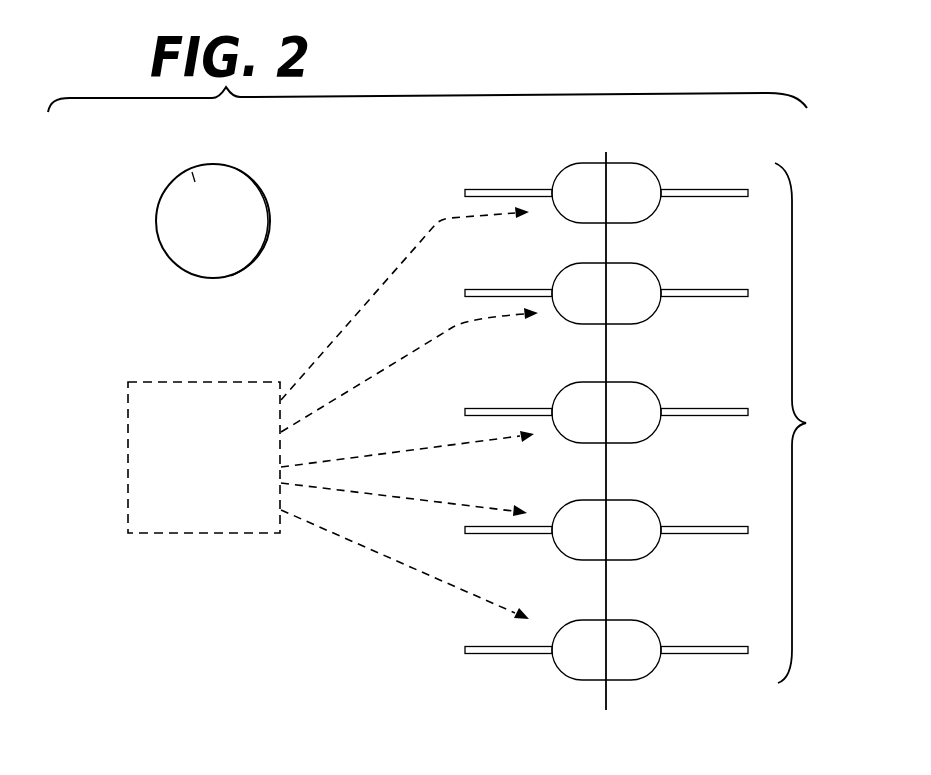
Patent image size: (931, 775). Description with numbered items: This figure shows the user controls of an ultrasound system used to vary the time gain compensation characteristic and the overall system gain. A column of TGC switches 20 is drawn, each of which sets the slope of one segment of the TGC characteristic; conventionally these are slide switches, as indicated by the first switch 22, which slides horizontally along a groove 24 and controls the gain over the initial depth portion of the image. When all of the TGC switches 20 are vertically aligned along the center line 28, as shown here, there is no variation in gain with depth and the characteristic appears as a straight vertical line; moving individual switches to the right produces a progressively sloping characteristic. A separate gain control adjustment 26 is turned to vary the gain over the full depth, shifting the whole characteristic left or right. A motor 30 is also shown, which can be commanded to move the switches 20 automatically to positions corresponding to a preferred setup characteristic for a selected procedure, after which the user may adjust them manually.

The TGC switches 20 is at (808, 423).
The first switch 22 is at (610, 162).
The groove 24 is at (497, 189).
The gain control adjustment 26 is at (154, 207).
The center line 28 is at (607, 694).
The motor 30 is at (127, 465).